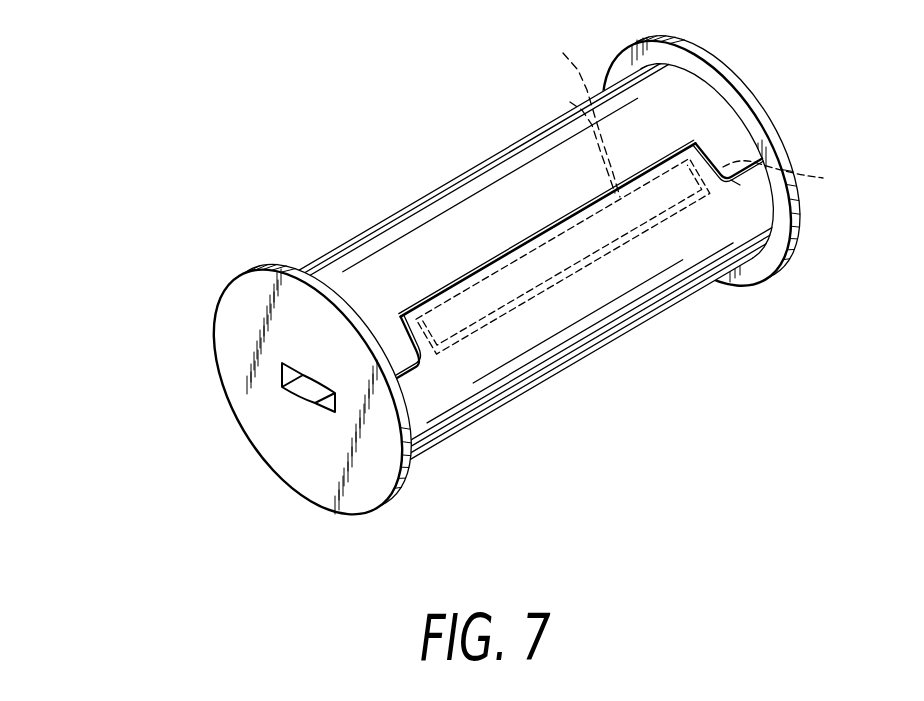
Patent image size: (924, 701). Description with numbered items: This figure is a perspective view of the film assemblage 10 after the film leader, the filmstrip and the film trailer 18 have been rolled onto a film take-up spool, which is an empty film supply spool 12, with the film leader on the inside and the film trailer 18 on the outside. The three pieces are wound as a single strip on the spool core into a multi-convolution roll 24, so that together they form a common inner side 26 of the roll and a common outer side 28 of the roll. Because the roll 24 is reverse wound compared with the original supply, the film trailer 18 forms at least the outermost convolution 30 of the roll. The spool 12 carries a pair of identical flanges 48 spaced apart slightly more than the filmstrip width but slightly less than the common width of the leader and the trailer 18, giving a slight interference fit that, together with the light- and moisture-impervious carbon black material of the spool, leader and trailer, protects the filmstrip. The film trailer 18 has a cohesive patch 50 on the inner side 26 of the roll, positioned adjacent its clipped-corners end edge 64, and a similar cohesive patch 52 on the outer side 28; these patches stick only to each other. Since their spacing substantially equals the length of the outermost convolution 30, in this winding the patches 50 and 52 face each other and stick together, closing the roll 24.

The film assemblage 10 is at (522, 285).
The film supply spool 12 is at (390, 505).
The film trailer 18 is at (563, 297).
The multi-convolution roll 24 is at (397, 213).
The inner side of the roll 26 is at (823, 178).
The outer side of the roll 28 is at (525, 268).
The outermost convolution 30 is at (463, 187).
The flanges 48 is at (777, 268).
The cohesive patch 50 is at (570, 102).
The cohesive patch 52 is at (563, 53).
The clipped-corners end edge 64 is at (567, 217).